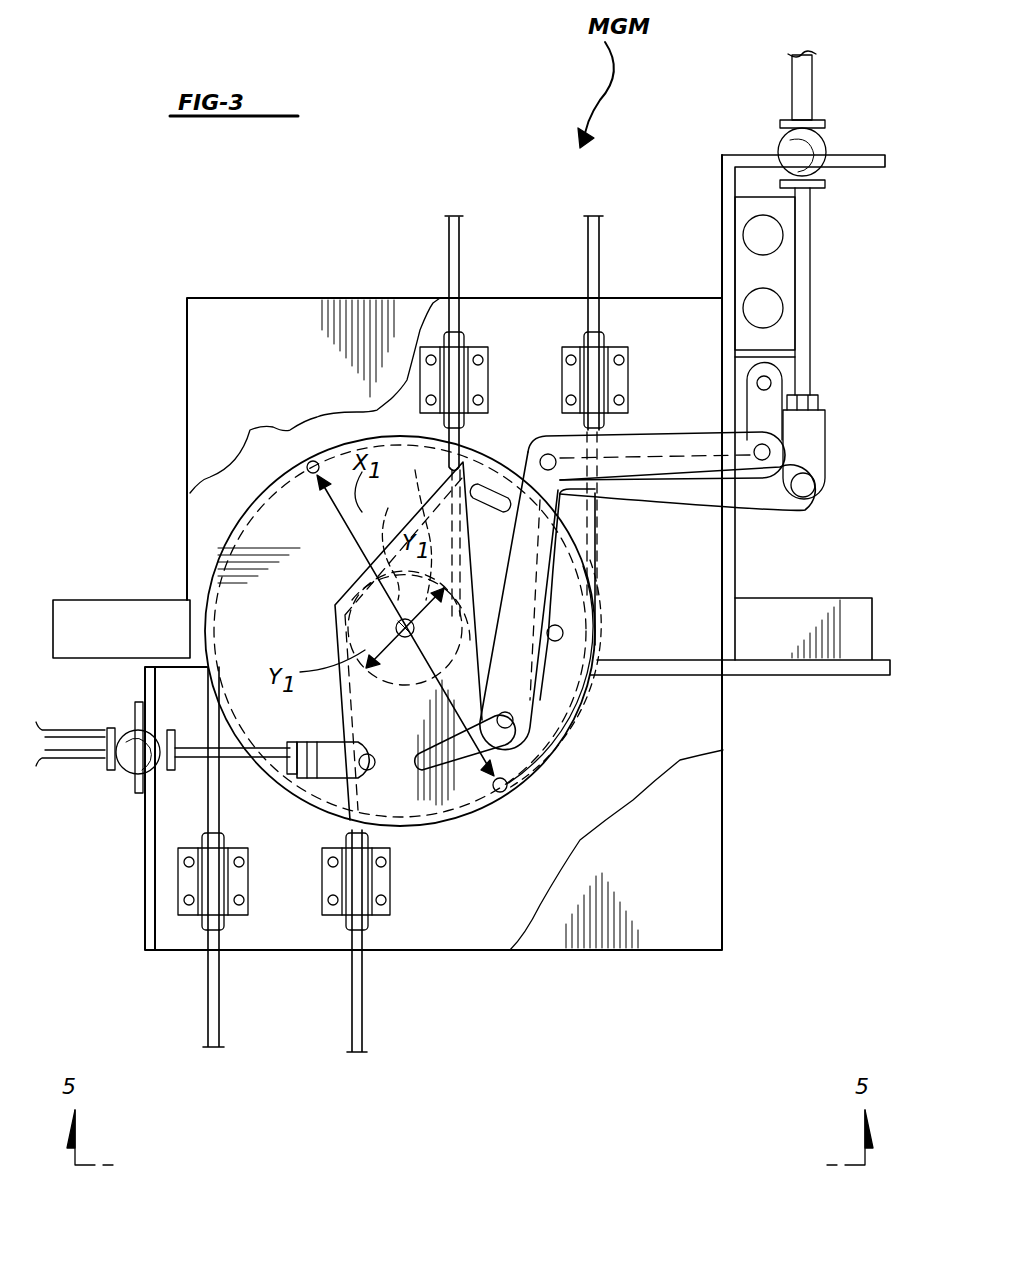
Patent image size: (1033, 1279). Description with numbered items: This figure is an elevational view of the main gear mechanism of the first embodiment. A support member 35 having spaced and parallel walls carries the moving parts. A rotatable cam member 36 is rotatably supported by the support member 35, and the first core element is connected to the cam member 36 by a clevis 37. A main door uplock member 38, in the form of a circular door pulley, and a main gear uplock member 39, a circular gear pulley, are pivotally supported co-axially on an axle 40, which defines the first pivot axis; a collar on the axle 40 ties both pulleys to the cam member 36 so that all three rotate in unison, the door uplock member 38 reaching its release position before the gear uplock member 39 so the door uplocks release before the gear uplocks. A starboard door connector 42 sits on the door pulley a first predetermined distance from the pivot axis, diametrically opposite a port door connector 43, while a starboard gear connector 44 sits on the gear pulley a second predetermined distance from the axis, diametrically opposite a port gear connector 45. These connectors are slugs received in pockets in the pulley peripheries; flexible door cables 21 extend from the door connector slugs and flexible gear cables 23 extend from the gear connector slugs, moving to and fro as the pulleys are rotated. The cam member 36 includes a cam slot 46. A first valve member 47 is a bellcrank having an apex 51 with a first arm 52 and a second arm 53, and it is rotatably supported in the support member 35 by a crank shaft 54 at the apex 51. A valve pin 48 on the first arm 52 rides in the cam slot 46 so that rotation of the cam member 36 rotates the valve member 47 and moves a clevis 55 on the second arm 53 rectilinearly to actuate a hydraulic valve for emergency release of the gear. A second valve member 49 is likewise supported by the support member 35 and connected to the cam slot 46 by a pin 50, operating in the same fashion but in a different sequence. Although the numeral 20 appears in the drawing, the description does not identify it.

The ball joint coupling 20 is at (80, 763).
The door cable 21 is at (599, 245).
The gear cable 23 is at (459, 255).
The support member 35 is at (487, 935).
The rotatable cam member 36 is at (413, 820).
The clevis 37 is at (323, 773).
The main door uplock member 38 is at (270, 527).
The main gear uplock member 39 is at (417, 521).
The axle 40 is at (396, 630).
The starboard door connector 42 is at (508, 786).
The port door connector 43 is at (313, 461).
The starboard gear connector 44 is at (408, 665).
The port gear connector 45 is at (384, 541).
The cam slot 46 is at (462, 760).
The first valve member 47 is at (785, 510).
The valve pin 48 is at (585, 676).
The second valve member 49 is at (690, 440).
The pin 50 is at (515, 715).
The apex 51 is at (528, 432).
The first arm 52 is at (568, 594).
The second arm 53 is at (672, 492).
The crank shaft 54 is at (555, 442).
The clevis 55 is at (815, 443).